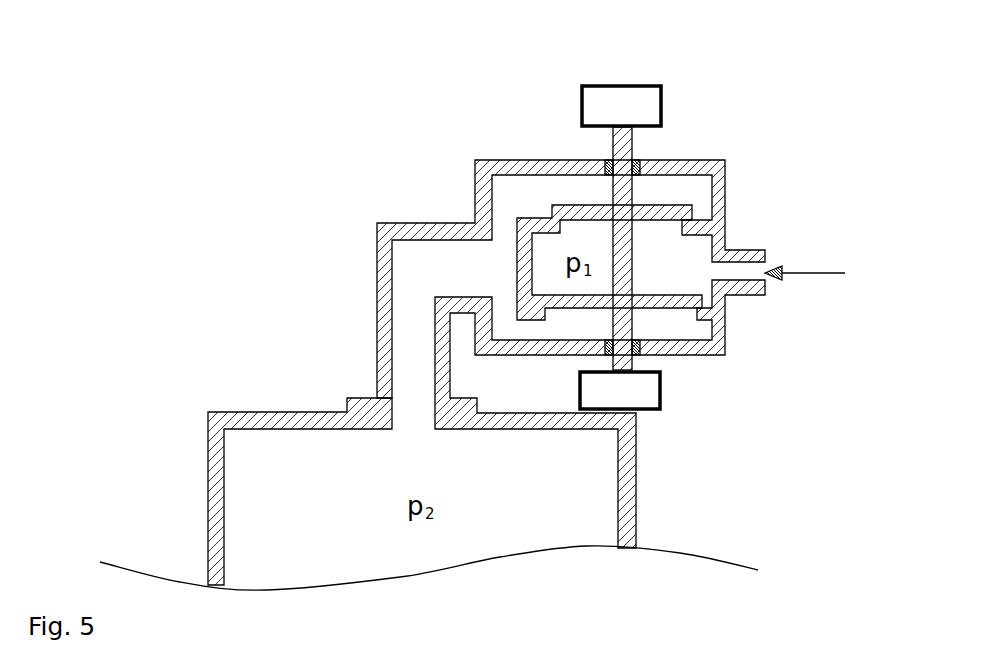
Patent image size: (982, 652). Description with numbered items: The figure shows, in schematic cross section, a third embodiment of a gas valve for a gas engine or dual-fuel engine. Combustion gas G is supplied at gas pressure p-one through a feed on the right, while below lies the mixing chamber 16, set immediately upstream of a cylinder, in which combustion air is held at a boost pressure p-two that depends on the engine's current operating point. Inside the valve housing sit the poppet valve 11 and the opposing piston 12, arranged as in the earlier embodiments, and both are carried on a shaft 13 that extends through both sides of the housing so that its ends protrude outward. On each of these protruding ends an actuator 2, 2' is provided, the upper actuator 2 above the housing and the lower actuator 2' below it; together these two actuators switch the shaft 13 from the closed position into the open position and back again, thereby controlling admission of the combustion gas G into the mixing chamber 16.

The actuator 2 is at (583, 73).
The actuator 2' is at (671, 416).
The poppet valve 11 is at (643, 310).
The opposing piston 12 is at (660, 207).
The shaft 13 is at (613, 195).
The mixing chamber 16 is at (288, 424).
The combustion gas G is at (808, 273).